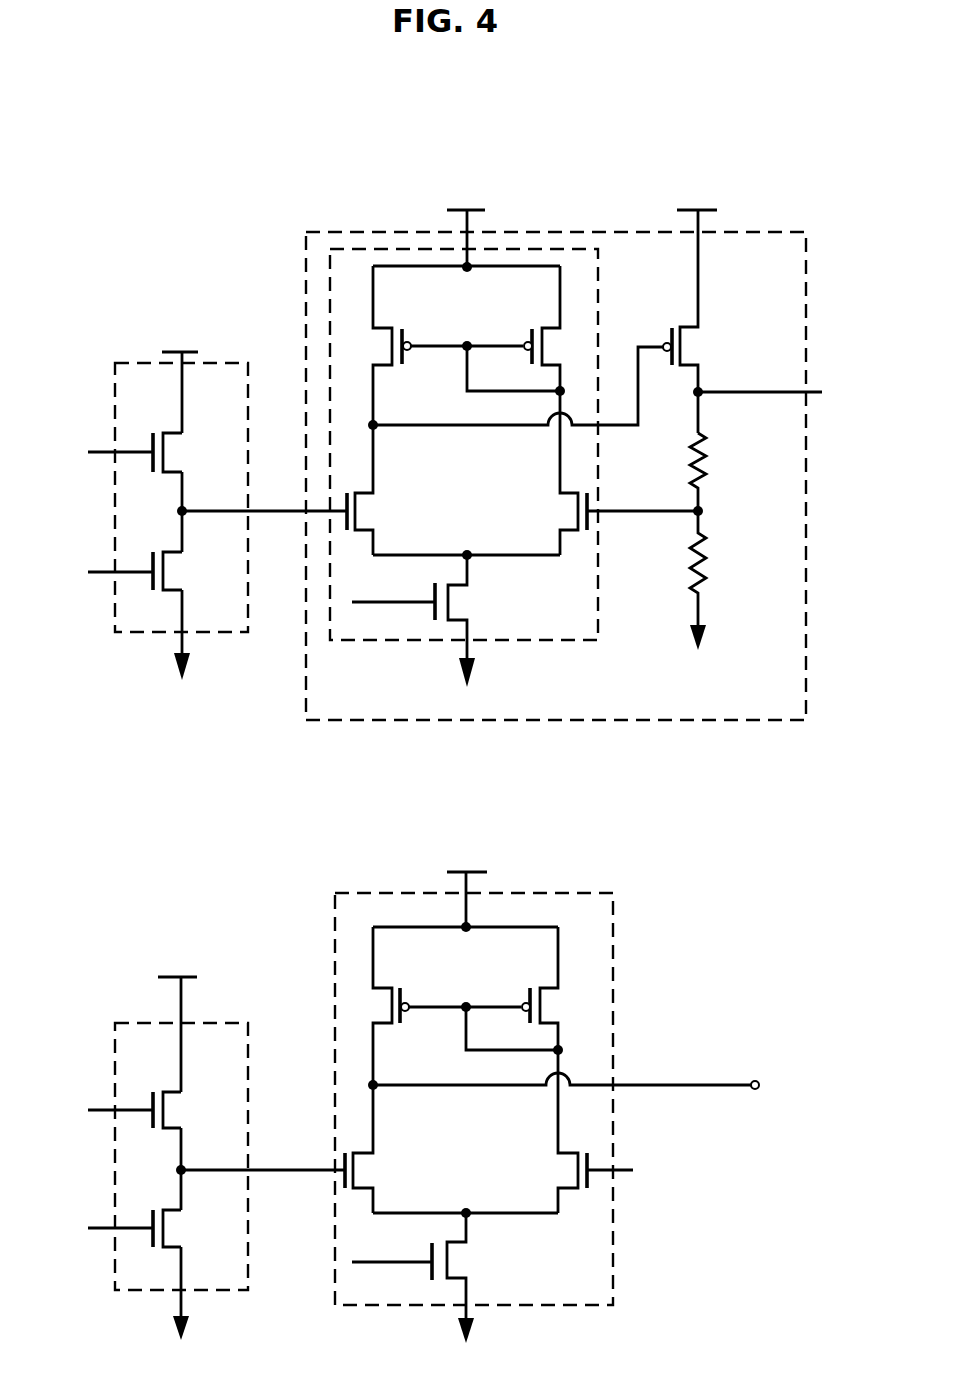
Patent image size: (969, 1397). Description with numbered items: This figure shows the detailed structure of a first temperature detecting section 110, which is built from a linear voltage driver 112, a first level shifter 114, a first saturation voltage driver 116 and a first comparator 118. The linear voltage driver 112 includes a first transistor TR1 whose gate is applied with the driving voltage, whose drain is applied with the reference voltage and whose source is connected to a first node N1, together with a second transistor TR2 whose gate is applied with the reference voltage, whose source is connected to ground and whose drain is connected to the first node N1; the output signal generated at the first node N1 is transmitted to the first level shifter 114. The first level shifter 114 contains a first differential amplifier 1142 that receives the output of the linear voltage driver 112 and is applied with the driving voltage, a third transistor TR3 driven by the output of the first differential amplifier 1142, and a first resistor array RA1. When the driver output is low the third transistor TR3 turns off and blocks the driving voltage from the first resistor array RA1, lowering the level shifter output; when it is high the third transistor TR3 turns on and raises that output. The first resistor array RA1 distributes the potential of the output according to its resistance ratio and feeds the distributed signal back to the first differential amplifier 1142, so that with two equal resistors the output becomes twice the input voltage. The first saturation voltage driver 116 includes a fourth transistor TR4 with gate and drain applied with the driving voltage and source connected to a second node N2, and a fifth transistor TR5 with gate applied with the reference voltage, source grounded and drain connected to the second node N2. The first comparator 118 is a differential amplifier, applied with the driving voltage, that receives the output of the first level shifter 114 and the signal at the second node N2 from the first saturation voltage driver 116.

The voltage detection circuit 110 is at (880, 116).
The linear voltage driver 112 is at (252, 363).
The first level shifter 114 is at (785, 232).
The first differential amplifier 1142 is at (598, 300).
The first saturation voltage driver 116 is at (218, 1023).
The first comparator 118 is at (587, 893).
The first transistor TR1 is at (187, 428).
The second transistor TR2 is at (184, 588).
The third transistor TR3 is at (702, 325).
The fourth transistor TR4 is at (183, 1090).
The fifth transistor TR5 is at (182, 1246).
The first resistor array RA1 is at (725, 470).
The first node N1 is at (262, 498).
The second node N2 is at (260, 1158).